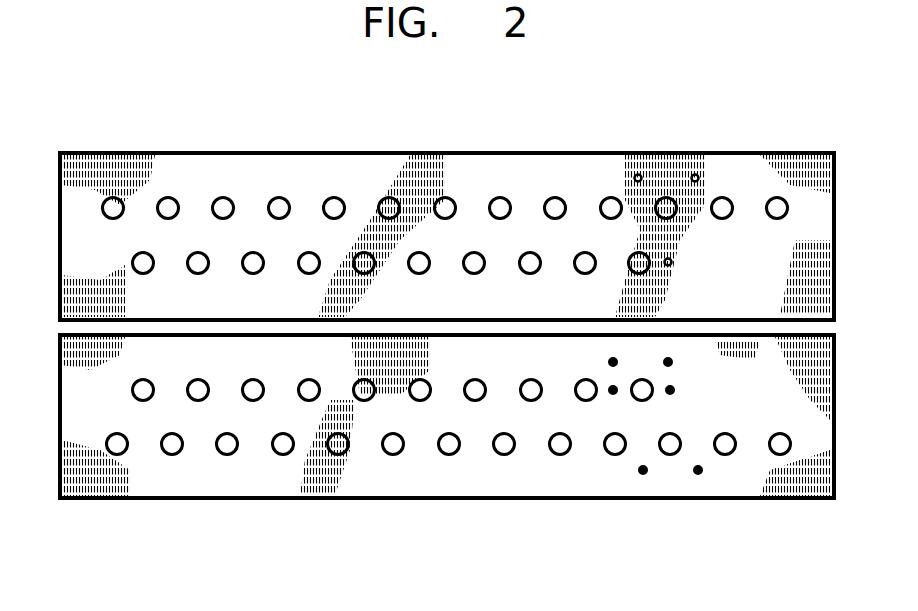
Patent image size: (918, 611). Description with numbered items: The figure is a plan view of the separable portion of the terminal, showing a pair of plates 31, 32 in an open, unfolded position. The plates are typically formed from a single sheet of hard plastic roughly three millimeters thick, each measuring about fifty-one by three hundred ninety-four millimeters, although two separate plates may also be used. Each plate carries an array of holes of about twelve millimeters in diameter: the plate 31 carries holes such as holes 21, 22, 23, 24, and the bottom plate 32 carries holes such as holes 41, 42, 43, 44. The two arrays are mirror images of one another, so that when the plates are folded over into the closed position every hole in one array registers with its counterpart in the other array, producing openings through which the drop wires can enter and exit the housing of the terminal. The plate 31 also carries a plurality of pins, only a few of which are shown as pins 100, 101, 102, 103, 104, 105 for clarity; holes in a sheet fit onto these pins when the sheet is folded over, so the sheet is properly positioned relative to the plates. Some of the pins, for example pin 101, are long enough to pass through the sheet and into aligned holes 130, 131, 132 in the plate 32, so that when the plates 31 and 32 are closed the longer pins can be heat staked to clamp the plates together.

The plate 31 is at (272, 473).
The bottom plate 32 is at (265, 188).
The hole 41 is at (662, 197).
The hole 42 is at (613, 197).
The hole 43 is at (558, 197).
The hole 44 is at (583, 264).
The hole 21 is at (669, 452).
The hole 22 is at (614, 452).
The hole 23 is at (561, 452).
The hole 24 is at (581, 390).
The aligned hole 130 is at (671, 263).
The aligned hole 131 is at (697, 176).
The aligned hole 132 is at (637, 175).
The pin 100 is at (671, 362).
The pin 101 is at (698, 473).
The pin 102 is at (643, 473).
The pin 103 is at (672, 390).
The pin 104 is at (613, 393).
The pin 105 is at (611, 361).